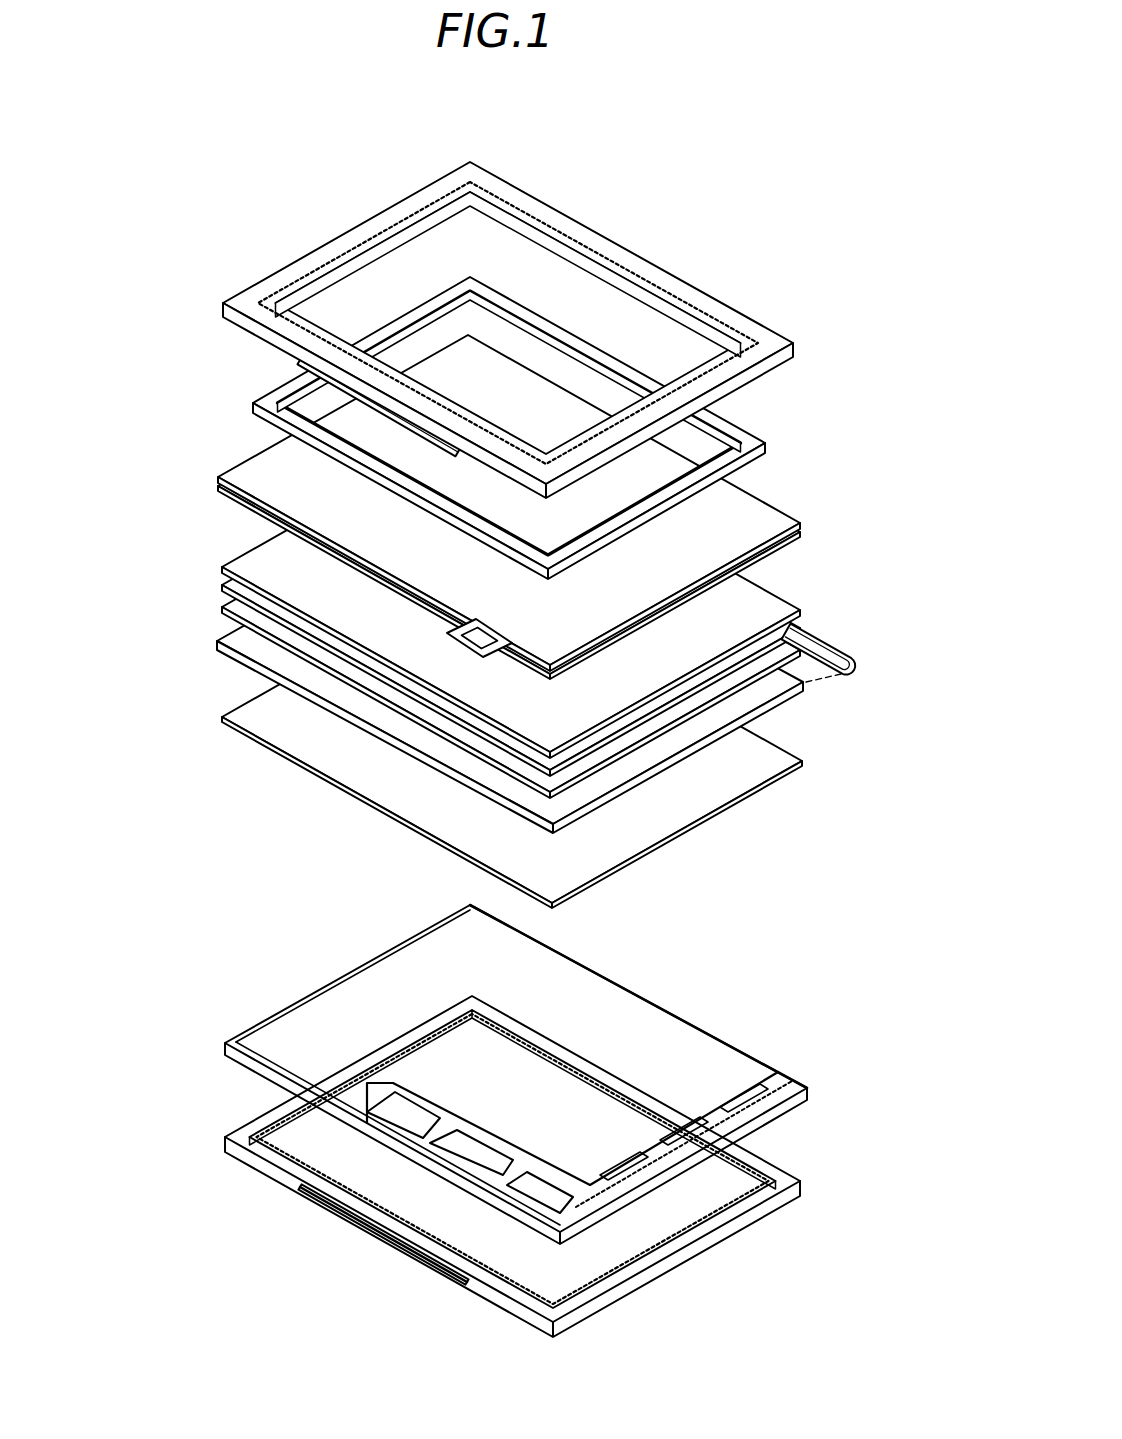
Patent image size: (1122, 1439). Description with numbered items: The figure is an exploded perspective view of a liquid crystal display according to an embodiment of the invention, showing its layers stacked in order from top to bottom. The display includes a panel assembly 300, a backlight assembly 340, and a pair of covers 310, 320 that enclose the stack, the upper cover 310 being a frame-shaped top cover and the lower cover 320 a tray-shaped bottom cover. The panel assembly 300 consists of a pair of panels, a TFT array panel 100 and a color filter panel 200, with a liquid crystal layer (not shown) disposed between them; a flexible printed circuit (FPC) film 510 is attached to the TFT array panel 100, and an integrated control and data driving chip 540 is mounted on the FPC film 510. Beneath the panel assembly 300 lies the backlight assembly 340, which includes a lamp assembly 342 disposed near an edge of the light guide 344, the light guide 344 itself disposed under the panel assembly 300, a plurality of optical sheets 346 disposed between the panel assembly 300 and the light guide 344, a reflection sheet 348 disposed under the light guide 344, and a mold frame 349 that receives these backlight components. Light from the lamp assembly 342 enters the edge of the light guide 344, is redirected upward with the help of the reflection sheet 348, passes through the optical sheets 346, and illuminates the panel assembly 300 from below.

The TFT array panel 100 is at (802, 535).
The color filter panel 200 is at (762, 507).
The panel assembly 300 is at (535, 749).
The cover 310 is at (765, 317).
The cover 320 is at (267, 370).
The backlight assembly 340 is at (494, 671).
The lamp assembly 342 is at (851, 678).
The light guide 344 is at (640, 762).
The optical sheets 346 is at (213, 553).
The reflection sheet 348 is at (625, 835).
The mold frame 349 is at (810, 1093).
The flexible printed circuit (FPC) film 510 is at (534, 645).
The integrated control and data driving chip 540 is at (505, 655).